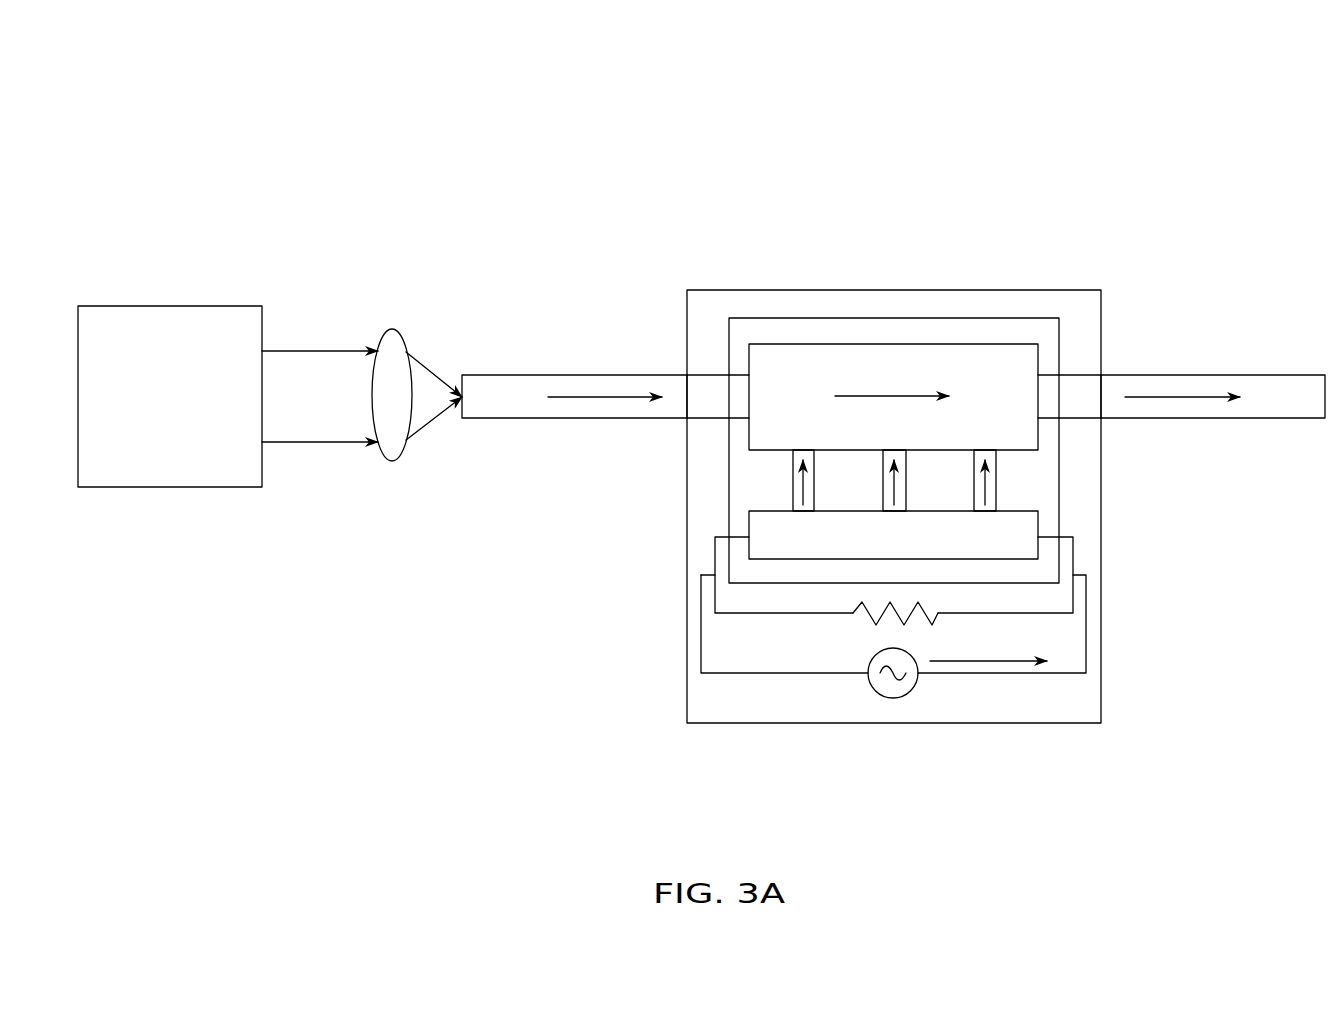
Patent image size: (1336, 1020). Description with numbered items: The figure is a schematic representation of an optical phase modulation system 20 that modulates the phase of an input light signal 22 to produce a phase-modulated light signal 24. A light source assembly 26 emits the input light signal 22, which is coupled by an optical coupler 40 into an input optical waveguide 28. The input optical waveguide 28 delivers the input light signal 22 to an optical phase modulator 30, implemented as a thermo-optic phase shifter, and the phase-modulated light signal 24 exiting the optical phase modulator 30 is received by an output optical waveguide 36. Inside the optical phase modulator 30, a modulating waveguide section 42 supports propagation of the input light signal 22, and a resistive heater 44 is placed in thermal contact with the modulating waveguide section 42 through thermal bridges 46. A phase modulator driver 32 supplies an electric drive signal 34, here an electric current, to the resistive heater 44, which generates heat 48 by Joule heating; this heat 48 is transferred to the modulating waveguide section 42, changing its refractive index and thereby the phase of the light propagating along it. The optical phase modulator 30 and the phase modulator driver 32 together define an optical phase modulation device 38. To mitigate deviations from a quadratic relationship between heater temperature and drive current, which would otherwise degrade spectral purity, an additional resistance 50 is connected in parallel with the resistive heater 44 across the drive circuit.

The optical phase modulation system 20 is at (1190, 116).
The input light signal 22 is at (597, 398).
The phase-modulated light signal 24 is at (1182, 397).
The light source assembly 26 is at (156, 490).
The input optical waveguide 28 is at (528, 420).
The optical phase modulator 30 is at (1017, 318).
The phase modulator driver 32 is at (893, 698).
The electric drive signal 34 is at (987, 660).
The output optical waveguide 36 is at (1270, 420).
The optical phase modulation device 38 is at (1042, 725).
The optical coupler 40 is at (392, 463).
The modulating waveguide section 42 is at (812, 343).
The resistive heater 44 is at (1027, 559).
The thermal bridges 46 is at (974, 495).
The heat 48 is at (996, 488).
The resistance 50 is at (866, 616).